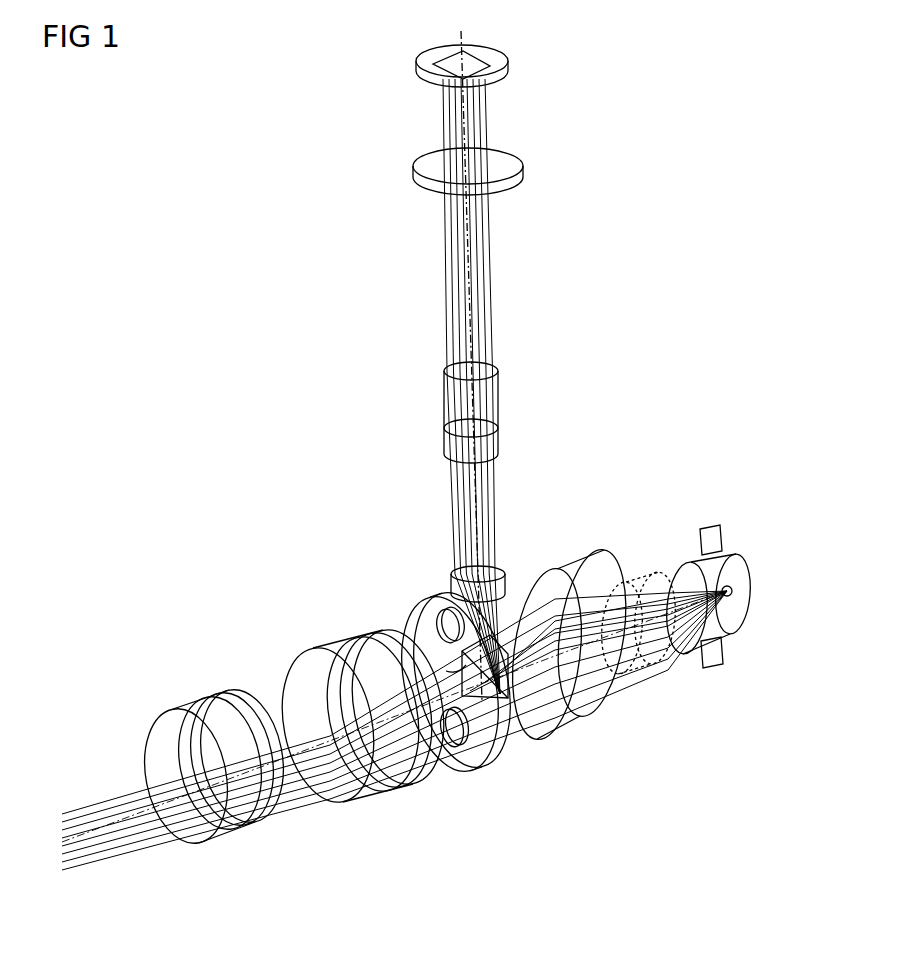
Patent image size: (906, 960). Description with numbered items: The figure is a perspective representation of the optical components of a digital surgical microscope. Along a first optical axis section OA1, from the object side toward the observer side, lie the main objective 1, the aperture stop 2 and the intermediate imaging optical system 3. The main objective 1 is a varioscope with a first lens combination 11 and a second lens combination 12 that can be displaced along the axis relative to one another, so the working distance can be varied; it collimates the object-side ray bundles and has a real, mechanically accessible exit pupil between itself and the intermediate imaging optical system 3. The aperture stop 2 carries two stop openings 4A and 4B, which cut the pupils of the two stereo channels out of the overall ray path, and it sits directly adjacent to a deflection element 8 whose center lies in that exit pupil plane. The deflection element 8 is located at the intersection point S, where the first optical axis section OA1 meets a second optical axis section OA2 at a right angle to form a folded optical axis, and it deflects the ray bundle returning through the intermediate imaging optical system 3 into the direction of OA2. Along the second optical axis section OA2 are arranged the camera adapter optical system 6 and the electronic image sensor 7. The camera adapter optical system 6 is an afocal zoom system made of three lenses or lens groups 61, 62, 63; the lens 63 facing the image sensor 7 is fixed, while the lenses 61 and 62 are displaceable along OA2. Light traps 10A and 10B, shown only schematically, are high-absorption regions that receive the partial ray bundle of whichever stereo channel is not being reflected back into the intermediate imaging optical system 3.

The main objective 1 is at (291, 737).
The first lens combination 11 is at (224, 671).
The second lens combination 12 is at (380, 617).
The aperture stop 2 is at (478, 762).
The intermediate imaging optical system 3 is at (764, 667).
The stop opening 4A is at (452, 760).
The second stop opening 4B is at (440, 618).
The camera adapter optical system 6 is at (470, 359).
The object-side lens 61 is at (494, 559).
The lens group 62 is at (510, 372).
The lens 63 is at (518, 166).
The electronic image sensor 7 is at (446, 54).
The deflection element 8 is at (498, 648).
The light trap 10A is at (722, 539).
The light trap 10B is at (723, 651).
The first optical axis section OA1 is at (733, 588).
The second optical axis section OA2 is at (461, 356).
The intersection point S is at (448, 674).